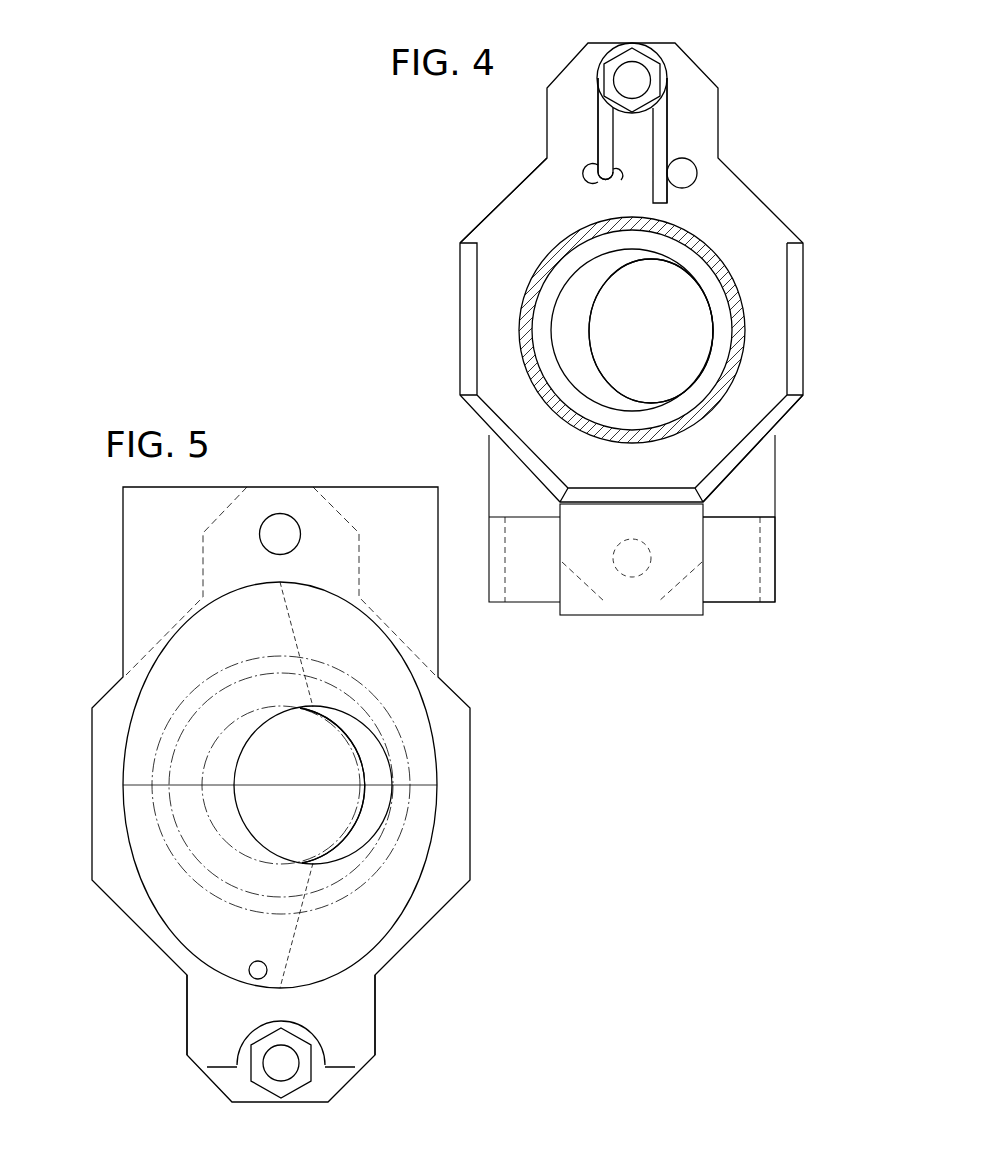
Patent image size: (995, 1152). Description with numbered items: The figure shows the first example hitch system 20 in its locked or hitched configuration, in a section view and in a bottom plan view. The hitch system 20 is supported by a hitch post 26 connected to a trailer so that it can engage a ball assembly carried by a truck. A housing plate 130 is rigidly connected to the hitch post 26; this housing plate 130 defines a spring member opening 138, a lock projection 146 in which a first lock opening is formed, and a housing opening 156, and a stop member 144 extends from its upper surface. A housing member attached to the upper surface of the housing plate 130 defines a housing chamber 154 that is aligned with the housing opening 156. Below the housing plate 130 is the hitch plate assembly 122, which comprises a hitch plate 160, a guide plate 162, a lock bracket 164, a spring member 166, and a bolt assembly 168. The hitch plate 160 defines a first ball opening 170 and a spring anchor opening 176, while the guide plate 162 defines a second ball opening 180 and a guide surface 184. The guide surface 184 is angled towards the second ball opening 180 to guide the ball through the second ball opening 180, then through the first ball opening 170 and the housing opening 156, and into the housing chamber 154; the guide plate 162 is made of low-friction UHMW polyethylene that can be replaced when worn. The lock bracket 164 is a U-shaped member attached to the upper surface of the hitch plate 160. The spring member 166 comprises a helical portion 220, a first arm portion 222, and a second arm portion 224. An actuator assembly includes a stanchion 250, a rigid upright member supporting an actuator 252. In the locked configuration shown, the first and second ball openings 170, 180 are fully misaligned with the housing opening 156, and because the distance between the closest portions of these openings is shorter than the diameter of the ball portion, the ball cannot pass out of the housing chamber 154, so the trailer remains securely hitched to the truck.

In FIG. 4, the hitch system 20 is at (656, 332).
In FIG. 4, the hitch post 26 is at (740, 307).
In FIG. 4, the hitch plate assembly 122 is at (764, 195).
In FIG. 5, the hitch plate assembly 122 is at (473, 738).
In FIG. 4, the housing plate 130 is at (760, 228).
In FIG. 5, the housing plate 130 is at (330, 1083).
In FIG. 4, the spring member opening 138 is at (592, 178).
In FIG. 4, the stop member 144 is at (685, 168).
In FIG. 5, the lock projection 146 is at (334, 507).
In FIG. 5, the housing chamber 154 is at (281, 817).
In FIG. 4, the housing opening 156 is at (553, 348).
In FIG. 5, the housing opening 156 is at (336, 728).
In FIG. 4, the hitch plate 160 is at (760, 489).
In FIG. 5, the guide plate 162 is at (362, 1017).
In FIG. 4, the lock bracket 164 is at (730, 592).
In FIG. 4, the spring member 166 is at (670, 83).
In FIG. 4, the bolt assembly 168 is at (624, 56).
In FIG. 4, the first ball opening 170 is at (600, 300).
In FIG. 5, the first ball opening 170 is at (369, 733).
In FIG. 4, the spring anchor opening 176 is at (612, 175).
In FIG. 4, the second ball opening 180 is at (651, 331).
In FIG. 5, the second ball opening 180 is at (332, 785).
In FIG. 5, the guide surface 184 is at (388, 903).
In FIG. 4, the helical portion 220 is at (633, 107).
In FIG. 4, the first arm portion 222 is at (663, 128).
In FIG. 4, the second arm portion 224 is at (605, 130).
In FIG. 4, the stanchion 250 is at (780, 417).
In FIG. 4, the actuator 252 is at (652, 609).